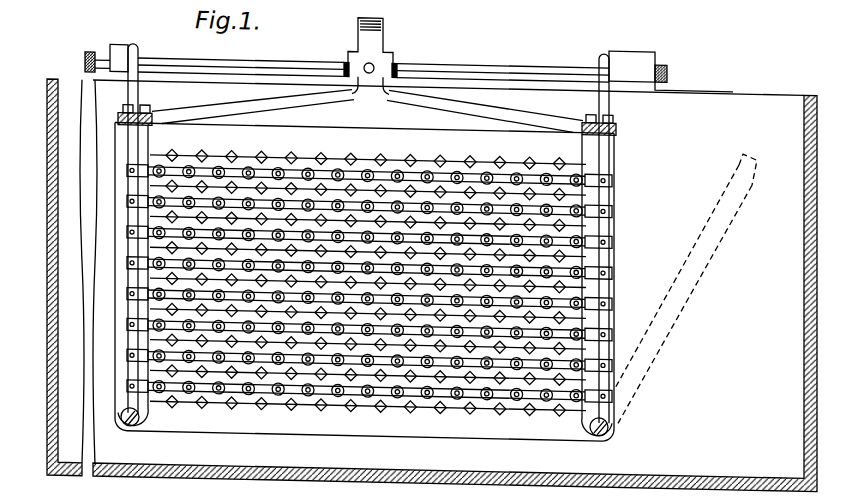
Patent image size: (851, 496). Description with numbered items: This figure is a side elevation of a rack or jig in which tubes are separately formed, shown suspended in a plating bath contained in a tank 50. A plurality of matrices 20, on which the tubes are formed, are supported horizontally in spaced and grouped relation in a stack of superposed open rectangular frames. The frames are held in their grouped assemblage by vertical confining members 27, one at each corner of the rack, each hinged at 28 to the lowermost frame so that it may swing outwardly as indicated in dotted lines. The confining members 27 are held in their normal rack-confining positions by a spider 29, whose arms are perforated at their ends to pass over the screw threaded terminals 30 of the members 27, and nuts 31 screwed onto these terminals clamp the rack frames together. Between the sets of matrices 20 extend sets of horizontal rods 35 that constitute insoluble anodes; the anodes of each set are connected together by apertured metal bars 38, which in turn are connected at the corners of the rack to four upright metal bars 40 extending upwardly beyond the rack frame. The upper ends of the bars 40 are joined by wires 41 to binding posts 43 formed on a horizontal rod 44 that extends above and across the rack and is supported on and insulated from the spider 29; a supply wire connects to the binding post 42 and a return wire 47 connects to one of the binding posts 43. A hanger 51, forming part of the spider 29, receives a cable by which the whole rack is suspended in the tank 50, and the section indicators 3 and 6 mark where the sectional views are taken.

The matrices 20 is at (388, 272).
The vertical confining members 27 is at (117, 396).
The hinge 28 is at (612, 421).
The spider 29 is at (332, 96).
The screw threaded terminals 30 is at (739, 147).
The nuts 31 is at (147, 106).
The rods 35 is at (582, 259).
The metal bars 38 is at (421, 153).
The upright metal bars 40 is at (137, 75).
The wires 41 is at (117, 42).
The binding post 42 is at (370, 66).
The binding posts 43 is at (88, 50).
The horizontal rod 44 is at (312, 55).
The return wire 47 is at (656, 66).
The tank 50 is at (764, 92).
The hanger 51 is at (368, 22).
The section line 3- 3 is at (400, 9).
The section line 6- 6 is at (160, 151).